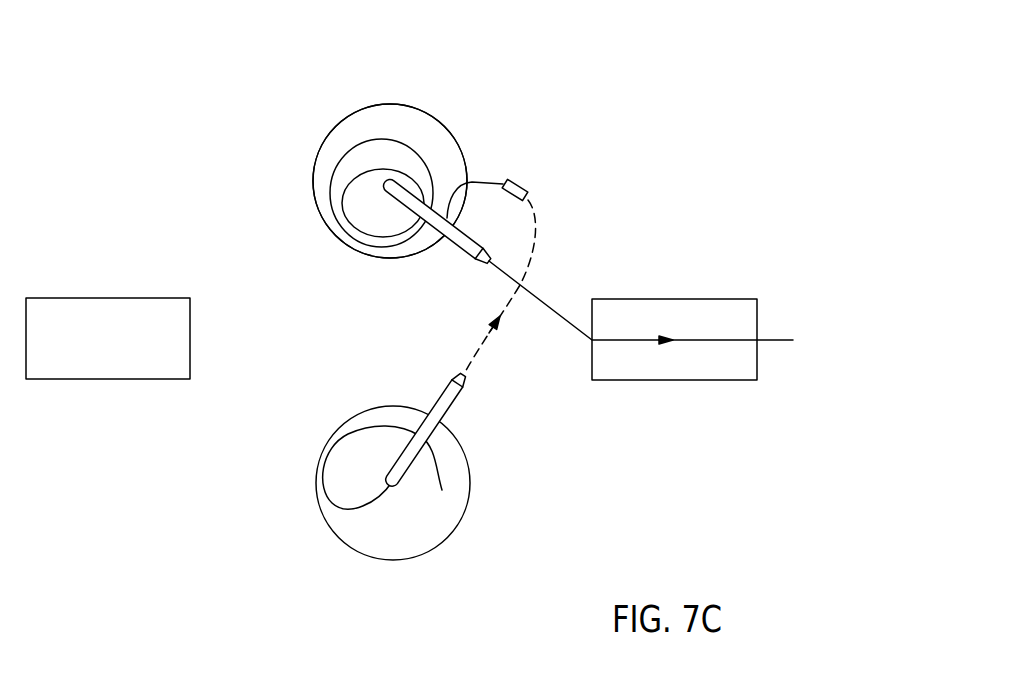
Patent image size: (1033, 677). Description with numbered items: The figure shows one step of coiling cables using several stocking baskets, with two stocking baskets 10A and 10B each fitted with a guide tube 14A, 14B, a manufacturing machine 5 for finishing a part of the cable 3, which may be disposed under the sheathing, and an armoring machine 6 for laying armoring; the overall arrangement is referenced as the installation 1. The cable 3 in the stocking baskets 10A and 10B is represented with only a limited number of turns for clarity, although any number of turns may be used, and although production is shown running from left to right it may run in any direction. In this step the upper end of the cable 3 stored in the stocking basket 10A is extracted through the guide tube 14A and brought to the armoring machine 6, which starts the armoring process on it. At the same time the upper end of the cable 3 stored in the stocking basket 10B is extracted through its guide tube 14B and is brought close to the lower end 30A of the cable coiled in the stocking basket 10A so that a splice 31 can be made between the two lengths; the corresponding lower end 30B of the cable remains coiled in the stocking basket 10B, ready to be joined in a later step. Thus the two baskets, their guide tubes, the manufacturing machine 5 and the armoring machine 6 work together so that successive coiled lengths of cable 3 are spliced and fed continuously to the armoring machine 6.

The medical device system 1 is at (337, 88).
The stocking basket 10A is at (458, 102).
The stocking basket 10B is at (457, 566).
The lower end 30A is at (483, 183).
The second tube 30B is at (442, 490).
The splice 31 is at (522, 184).
The guide tube 14A is at (460, 250).
The guide tube 14B is at (447, 403).
The cable 3 is at (567, 320).
The manufacturing machine 5 is at (99, 270).
The armoring machine 6 is at (692, 281).